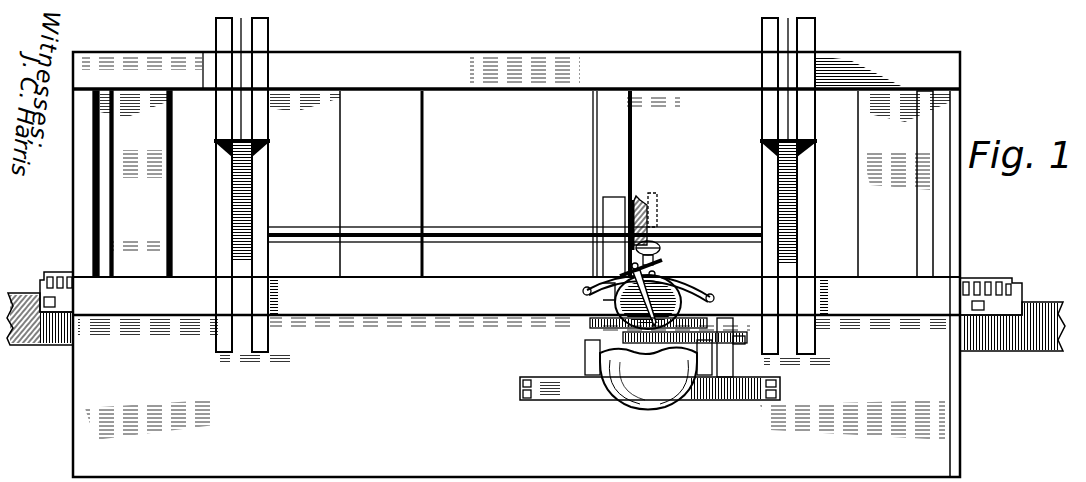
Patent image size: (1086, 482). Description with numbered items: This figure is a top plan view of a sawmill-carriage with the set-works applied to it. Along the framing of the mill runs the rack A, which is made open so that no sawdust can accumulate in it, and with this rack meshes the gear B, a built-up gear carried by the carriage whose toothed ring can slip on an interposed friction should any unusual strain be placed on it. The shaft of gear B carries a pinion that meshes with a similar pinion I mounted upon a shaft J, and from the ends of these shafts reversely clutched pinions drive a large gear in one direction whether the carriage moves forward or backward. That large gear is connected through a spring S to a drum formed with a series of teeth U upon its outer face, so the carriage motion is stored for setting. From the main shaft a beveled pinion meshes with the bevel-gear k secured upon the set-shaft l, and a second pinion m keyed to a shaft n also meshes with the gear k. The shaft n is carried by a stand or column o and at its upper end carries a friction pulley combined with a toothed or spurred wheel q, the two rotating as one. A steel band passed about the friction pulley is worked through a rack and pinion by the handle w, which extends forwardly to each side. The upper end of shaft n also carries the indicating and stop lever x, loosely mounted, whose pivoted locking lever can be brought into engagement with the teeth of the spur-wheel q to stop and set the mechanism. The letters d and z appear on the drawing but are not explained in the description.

The rack A is at (50, 273).
The gear B is at (730, 280).
The arc end ring d is at (724, 298).
The pinion I is at (746, 341).
The shaft J is at (728, 376).
The bevel-gear k is at (650, 215).
The set-shaft l is at (535, 228).
The second pinion m is at (660, 250).
The shaft n is at (646, 263).
The stand or column o is at (658, 196).
The toothed or spurred wheel q is at (680, 281).
The spring S is at (585, 364).
The teeth U is at (592, 331).
The handle w is at (583, 292).
The indicating and stop lever x is at (600, 299).
The dial disk z is at (648, 299).